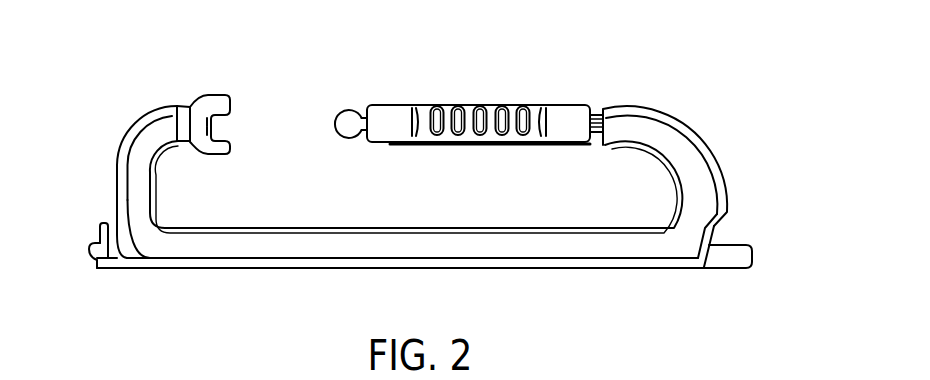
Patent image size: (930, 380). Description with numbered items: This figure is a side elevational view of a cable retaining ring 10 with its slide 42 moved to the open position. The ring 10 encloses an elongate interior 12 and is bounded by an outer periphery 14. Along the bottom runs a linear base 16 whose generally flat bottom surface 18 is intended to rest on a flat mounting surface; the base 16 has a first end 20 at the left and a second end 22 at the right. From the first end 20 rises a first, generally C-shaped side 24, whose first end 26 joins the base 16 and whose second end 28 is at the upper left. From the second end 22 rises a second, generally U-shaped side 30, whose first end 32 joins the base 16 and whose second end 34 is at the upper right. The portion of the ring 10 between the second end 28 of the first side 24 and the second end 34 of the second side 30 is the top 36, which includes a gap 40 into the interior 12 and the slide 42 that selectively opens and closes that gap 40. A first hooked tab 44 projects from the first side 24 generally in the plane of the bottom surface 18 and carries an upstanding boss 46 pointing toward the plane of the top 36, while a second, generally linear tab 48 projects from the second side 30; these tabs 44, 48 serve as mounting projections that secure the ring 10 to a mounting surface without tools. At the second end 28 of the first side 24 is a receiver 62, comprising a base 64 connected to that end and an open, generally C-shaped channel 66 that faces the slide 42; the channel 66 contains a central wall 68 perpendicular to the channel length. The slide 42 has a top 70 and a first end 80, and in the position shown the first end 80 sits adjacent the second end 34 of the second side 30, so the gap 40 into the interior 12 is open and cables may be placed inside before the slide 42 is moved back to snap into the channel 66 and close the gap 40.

The cable retaining ring 10 is at (88, 85).
The elongate interior 12 is at (587, 177).
The outer periphery 14 is at (748, 200).
The base 16 is at (382, 247).
The flat bottom surface 18 is at (265, 270).
The first end of the base 20 is at (187, 246).
The second end of the base 22 is at (587, 247).
The first side 24 is at (138, 188).
The first end of the first side 26 is at (162, 248).
The second end of the first side 28 is at (167, 111).
The second side 30 is at (690, 178).
The first end of the second side 32 is at (637, 247).
The second end of the second side 34 is at (612, 107).
The top of the ring 36 is at (490, 58).
The gap 40 is at (311, 112).
The slide 42 is at (508, 104).
The first hooked tab 44 is at (100, 257).
The upstanding boss 46 is at (102, 230).
The second tab 48 is at (733, 256).
The receiver 62 is at (213, 101).
The base of the receiver 64 is at (187, 109).
The channel 66 is at (213, 127).
The central wall 68 is at (215, 118).
The top of the slide 70 is at (542, 104).
The first end of the slide 80 is at (585, 105).